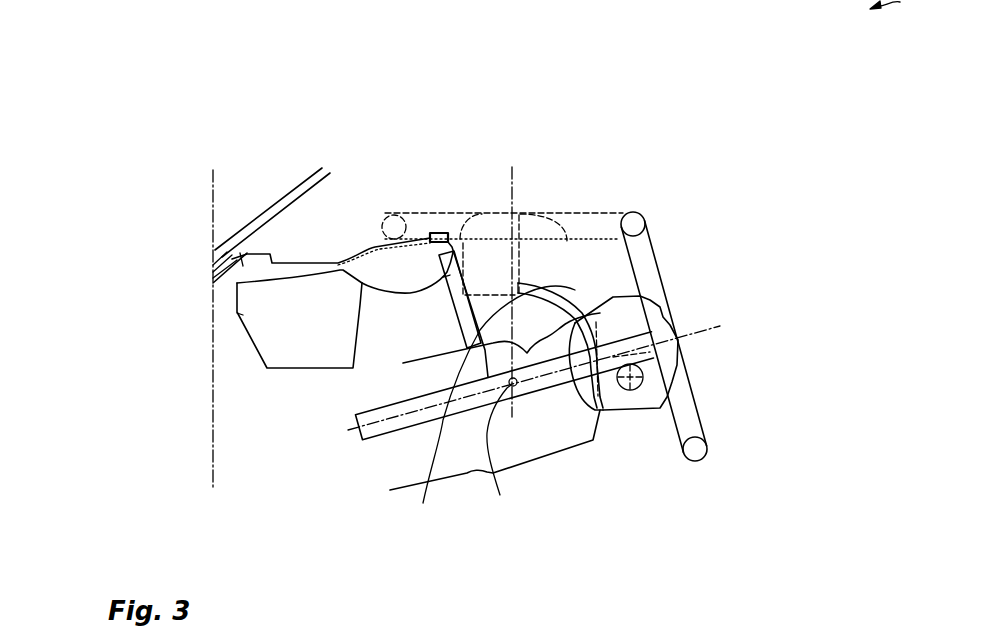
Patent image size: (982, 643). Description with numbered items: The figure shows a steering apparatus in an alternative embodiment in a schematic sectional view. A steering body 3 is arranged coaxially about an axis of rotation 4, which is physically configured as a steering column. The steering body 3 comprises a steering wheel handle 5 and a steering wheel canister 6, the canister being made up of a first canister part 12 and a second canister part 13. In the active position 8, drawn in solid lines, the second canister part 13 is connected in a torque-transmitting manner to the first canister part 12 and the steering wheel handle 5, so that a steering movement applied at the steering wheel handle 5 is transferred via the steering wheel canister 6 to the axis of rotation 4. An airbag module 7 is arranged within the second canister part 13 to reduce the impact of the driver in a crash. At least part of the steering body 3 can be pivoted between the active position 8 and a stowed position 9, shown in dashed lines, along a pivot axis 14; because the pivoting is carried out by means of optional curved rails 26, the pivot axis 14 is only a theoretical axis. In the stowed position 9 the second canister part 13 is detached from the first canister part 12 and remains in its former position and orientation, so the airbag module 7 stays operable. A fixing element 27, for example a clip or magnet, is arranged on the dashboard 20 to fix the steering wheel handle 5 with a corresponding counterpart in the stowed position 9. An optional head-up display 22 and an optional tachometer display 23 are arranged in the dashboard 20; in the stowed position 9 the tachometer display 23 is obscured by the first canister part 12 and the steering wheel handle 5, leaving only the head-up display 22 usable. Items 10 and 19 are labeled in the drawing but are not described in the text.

The steering body 3 is at (722, 545).
The axis of rotation 4 is at (693, 330).
The steering wheel handle 5 is at (680, 289).
The steering wheel canister 6 is at (663, 504).
The airbag module 7 is at (621, 405).
The active position 8 is at (697, 312).
The stowed position 9 is at (505, 200).
The lever arm 10 is at (578, 228).
The first canister part 12 is at (477, 245).
The second canister part 13 is at (623, 403).
The pivot axis 14 is at (500, 495).
The pivot axis 19 is at (712, 208).
The dashboard 20 is at (240, 256).
The head-up display 22 is at (237, 313).
The tachometer display 23 is at (340, 270).
The curved rails 26 is at (423, 503).
The fixing element 27 is at (370, 248).